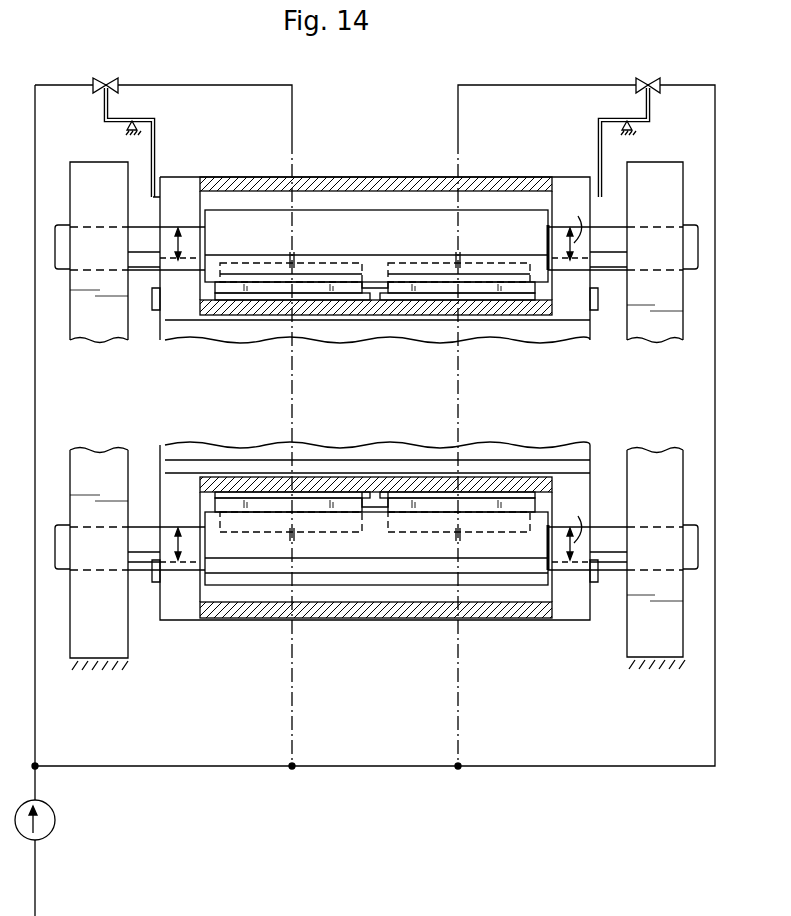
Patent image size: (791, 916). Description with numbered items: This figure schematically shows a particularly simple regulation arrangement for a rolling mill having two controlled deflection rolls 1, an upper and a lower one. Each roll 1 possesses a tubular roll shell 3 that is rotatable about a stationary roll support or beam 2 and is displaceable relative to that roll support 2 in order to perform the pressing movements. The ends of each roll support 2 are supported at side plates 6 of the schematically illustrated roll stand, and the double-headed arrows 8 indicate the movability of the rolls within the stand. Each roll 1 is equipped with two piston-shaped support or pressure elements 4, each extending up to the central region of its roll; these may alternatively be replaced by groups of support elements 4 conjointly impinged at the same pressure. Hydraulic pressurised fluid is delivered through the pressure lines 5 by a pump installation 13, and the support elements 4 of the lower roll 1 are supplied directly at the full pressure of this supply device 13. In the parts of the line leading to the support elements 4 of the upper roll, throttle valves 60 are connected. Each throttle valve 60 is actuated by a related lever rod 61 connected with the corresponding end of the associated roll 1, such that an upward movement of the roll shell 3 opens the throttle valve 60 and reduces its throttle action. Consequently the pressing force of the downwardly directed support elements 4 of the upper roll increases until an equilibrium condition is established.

The controlled deflection roll 1 is at (372, 176).
The roll support 2 is at (422, 218).
The roll shell 3 is at (485, 183).
The support element 4 is at (263, 288).
The hydraulic pressure line 5 is at (38, 371).
The side plate 6 is at (85, 168).
The double-headed arrow 8 is at (376, 374).
The pump installation 13 is at (50, 832).
The throttle valve 60 is at (108, 83).
The lever rod 61 is at (153, 146).